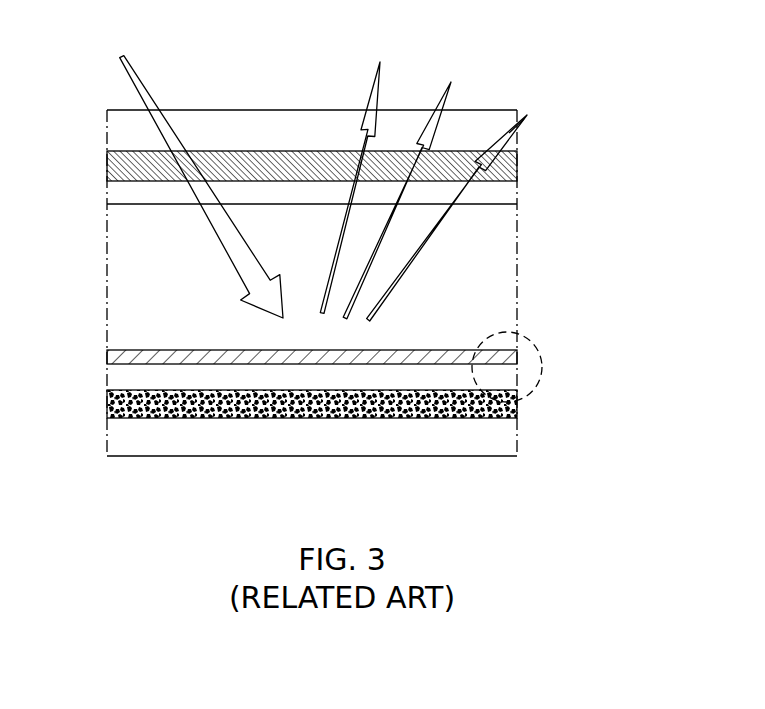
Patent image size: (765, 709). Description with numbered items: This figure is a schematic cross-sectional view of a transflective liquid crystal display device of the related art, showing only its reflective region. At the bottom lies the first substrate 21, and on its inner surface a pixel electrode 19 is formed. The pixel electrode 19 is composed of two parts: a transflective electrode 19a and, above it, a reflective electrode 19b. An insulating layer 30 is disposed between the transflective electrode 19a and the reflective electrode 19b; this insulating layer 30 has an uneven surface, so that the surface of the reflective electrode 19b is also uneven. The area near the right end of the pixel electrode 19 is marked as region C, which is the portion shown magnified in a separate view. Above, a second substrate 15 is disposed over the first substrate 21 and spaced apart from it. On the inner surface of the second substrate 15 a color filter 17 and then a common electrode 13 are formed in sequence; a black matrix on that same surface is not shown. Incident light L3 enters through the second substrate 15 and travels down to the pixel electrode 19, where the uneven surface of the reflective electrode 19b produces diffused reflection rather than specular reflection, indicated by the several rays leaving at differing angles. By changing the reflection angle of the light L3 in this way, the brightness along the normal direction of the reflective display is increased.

The incident light L3 is at (128, 58).
The second substrate 15 is at (505, 128).
The color filter 17 is at (519, 167).
The common electrode 13 is at (507, 194).
The region C is at (527, 345).
The pixel electrode 19 is at (376, 379).
The reflective electrode 19b is at (513, 356).
The transflective electrode 19a is at (507, 405).
The first substrate 21 is at (507, 434).
The insulating layer 30 is at (118, 372).